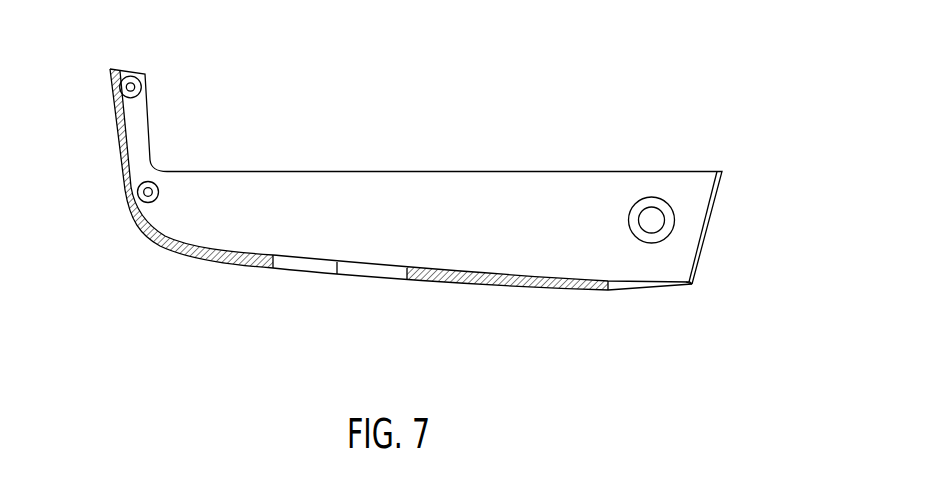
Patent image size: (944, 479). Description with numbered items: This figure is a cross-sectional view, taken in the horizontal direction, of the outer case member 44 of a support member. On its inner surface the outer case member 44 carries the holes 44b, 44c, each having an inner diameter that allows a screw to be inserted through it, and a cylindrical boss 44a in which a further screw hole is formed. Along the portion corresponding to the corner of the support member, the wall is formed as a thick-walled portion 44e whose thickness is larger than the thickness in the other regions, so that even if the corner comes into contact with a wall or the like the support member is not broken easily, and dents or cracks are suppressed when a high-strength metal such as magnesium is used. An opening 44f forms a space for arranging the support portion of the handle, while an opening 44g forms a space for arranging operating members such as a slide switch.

The outer case member 44 is at (430, 195).
The cylindrical boss 44a is at (648, 198).
The hole 44b is at (142, 87).
The hole 44c is at (160, 187).
The thick-walled portion 44e is at (172, 243).
The opening 44f is at (695, 287).
The opening 44g is at (333, 267).